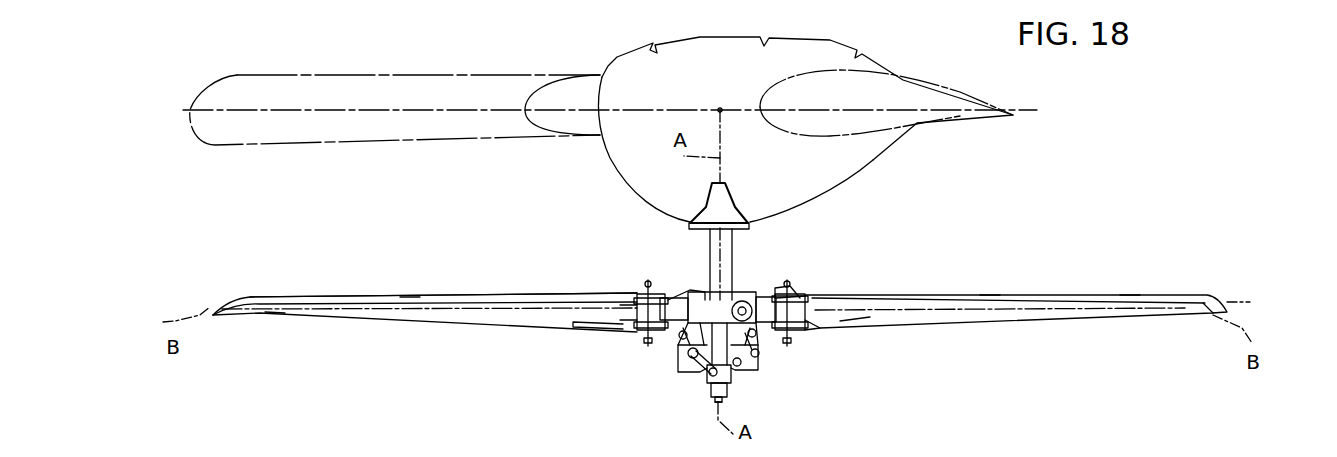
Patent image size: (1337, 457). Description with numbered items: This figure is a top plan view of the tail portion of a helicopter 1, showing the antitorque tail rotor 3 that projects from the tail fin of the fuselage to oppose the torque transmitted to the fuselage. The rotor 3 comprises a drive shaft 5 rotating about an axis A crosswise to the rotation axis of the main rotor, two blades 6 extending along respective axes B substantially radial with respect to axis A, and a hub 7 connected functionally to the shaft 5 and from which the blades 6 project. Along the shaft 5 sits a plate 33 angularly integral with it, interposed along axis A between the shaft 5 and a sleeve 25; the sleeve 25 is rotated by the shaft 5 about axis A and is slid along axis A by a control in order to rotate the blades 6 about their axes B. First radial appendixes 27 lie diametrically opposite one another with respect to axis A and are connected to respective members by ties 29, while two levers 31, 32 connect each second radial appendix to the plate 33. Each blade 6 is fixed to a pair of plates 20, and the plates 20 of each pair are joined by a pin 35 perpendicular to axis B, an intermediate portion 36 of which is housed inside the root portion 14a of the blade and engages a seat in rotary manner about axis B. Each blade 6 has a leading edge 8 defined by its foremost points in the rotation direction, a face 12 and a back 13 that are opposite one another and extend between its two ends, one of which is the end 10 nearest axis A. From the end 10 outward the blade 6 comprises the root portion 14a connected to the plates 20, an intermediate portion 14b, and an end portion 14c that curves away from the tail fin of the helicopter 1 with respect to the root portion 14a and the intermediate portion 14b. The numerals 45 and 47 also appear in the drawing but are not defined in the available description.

The helicopter 1 is at (194, 72).
The antitorque tail rotor 3 is at (854, 423).
The drive shaft 5 is at (727, 246).
The blades 6 is at (507, 318).
The hub 7 is at (670, 347).
The leading edge 8 is at (343, 294).
The end 10 is at (648, 285).
The face 12 is at (406, 324).
The back 13 is at (262, 294).
The root portion 14a is at (585, 320).
The intermediate portion 14b is at (420, 296).
The end portion 14c is at (277, 313).
The plates 20 is at (852, 290).
The sleeve 25 is at (717, 403).
The first radial appendixes 27 is at (758, 368).
The ties 29 is at (706, 300).
The lever 31 is at (704, 376).
The lever 32 is at (696, 372).
The plate 33 is at (710, 292).
The pin 35 is at (638, 342).
The intermediate portion 36 is at (658, 291).
The pivot pin 45 is at (640, 300).
The grip fitting 47 is at (803, 292).